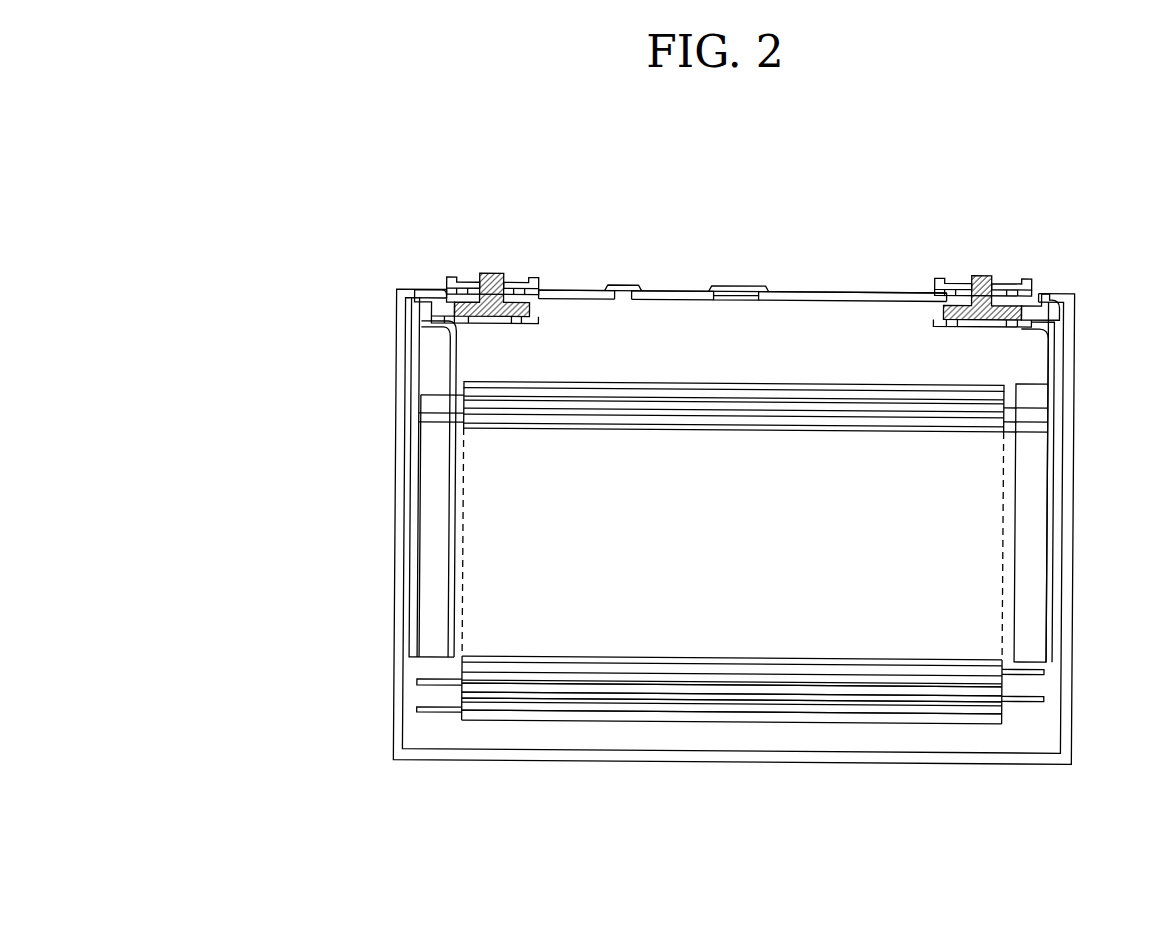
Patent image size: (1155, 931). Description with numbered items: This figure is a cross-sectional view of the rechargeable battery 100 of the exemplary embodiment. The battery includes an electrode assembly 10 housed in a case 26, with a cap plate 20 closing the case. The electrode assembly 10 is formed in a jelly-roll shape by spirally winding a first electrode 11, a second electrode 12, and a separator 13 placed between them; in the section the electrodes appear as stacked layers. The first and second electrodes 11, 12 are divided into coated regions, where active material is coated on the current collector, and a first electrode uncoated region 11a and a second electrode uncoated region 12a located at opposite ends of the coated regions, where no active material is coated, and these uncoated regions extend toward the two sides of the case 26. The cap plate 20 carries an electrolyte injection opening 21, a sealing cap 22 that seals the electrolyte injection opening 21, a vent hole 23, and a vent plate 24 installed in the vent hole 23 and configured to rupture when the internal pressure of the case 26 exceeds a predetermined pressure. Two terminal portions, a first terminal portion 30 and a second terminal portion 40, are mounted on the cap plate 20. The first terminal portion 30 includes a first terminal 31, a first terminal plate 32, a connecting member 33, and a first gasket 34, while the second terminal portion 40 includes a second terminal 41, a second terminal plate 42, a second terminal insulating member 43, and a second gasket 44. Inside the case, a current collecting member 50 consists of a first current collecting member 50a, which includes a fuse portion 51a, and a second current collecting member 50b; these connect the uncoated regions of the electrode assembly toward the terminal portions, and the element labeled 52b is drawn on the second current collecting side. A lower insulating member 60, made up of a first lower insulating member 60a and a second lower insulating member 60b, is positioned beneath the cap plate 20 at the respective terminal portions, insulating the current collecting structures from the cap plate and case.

The rechargeable battery 100 is at (708, 125).
The electrode assembly 10 is at (834, 624).
The first electrode 11 is at (605, 702).
The first electrode uncoated region 11a is at (1012, 700).
The second electrode 12 is at (525, 714).
The second electrode uncoated region 12a is at (434, 715).
The separator 13 is at (735, 690).
The cap plate 20 is at (807, 291).
The electrolyte injection opening 21 is at (628, 302).
The sealing cap 22 is at (613, 302).
The vent hole 23 is at (722, 302).
The vent plate 24 is at (742, 302).
The case 26 is at (1073, 620).
The first terminal portion 30 is at (560, 166).
The first terminal 31 is at (490, 275).
The first terminal plate 32 is at (525, 279).
The connecting member 33 is at (444, 291).
The first gasket 34 is at (473, 279).
The second terminal portion 40 is at (1062, 168).
The second terminal 41 is at (982, 274).
The second terminal plate 42 is at (945, 282).
The second terminal insulating member 43 is at (1025, 285).
The second gasket 44 is at (1013, 276).
The current collecting member 50 is at (238, 582).
The first current collecting member 50a is at (412, 435).
The second current collecting member 50b is at (1050, 469).
The fuse portion 51a is at (462, 350).
The second current collecting lead 52b is at (1052, 348).
The lower insulating member 60 is at (238, 496).
The first lower insulating member 60a is at (412, 315).
The second lower insulating member 60b is at (1050, 309).